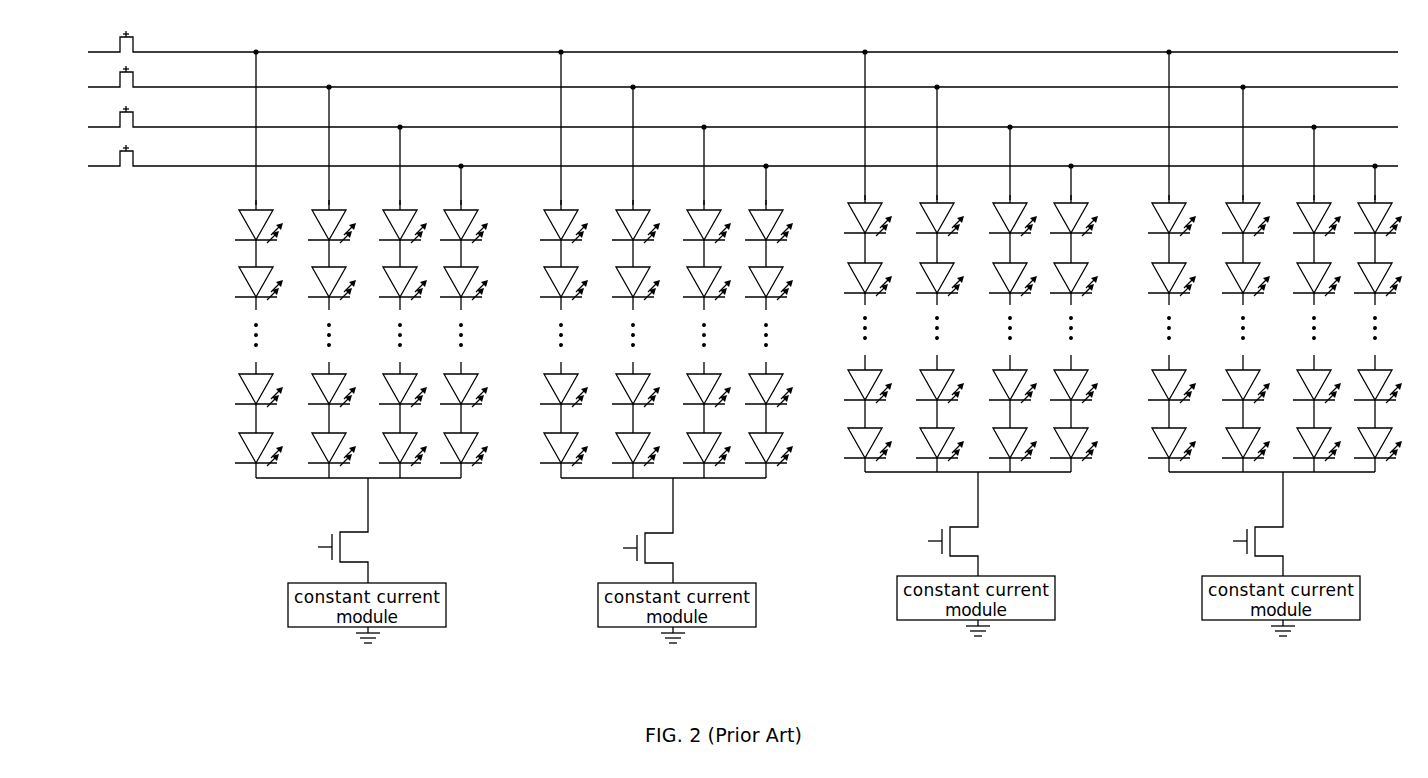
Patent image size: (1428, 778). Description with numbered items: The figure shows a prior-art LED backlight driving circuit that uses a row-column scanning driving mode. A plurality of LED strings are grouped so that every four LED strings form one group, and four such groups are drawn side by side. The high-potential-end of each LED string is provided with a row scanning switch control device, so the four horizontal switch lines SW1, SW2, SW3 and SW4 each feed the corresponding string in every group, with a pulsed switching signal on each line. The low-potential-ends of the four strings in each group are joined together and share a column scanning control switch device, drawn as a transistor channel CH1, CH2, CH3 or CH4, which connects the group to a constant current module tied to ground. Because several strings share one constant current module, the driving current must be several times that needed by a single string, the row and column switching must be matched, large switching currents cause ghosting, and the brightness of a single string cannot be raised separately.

The row scanning switch control device SW1 is at (715, 46).
The row scanning switch control device SW2 is at (715, 81).
The row scanning switch control device SW3 is at (715, 121).
The row scanning switch control device SW4 is at (715, 160).
The column scanning control switch device CH1 is at (320, 530).
The column scanning control switch device CH2 is at (622, 530).
The column scanning control switch device CH3 is at (927, 524).
The column scanning control switch device CH4 is at (1232, 524).